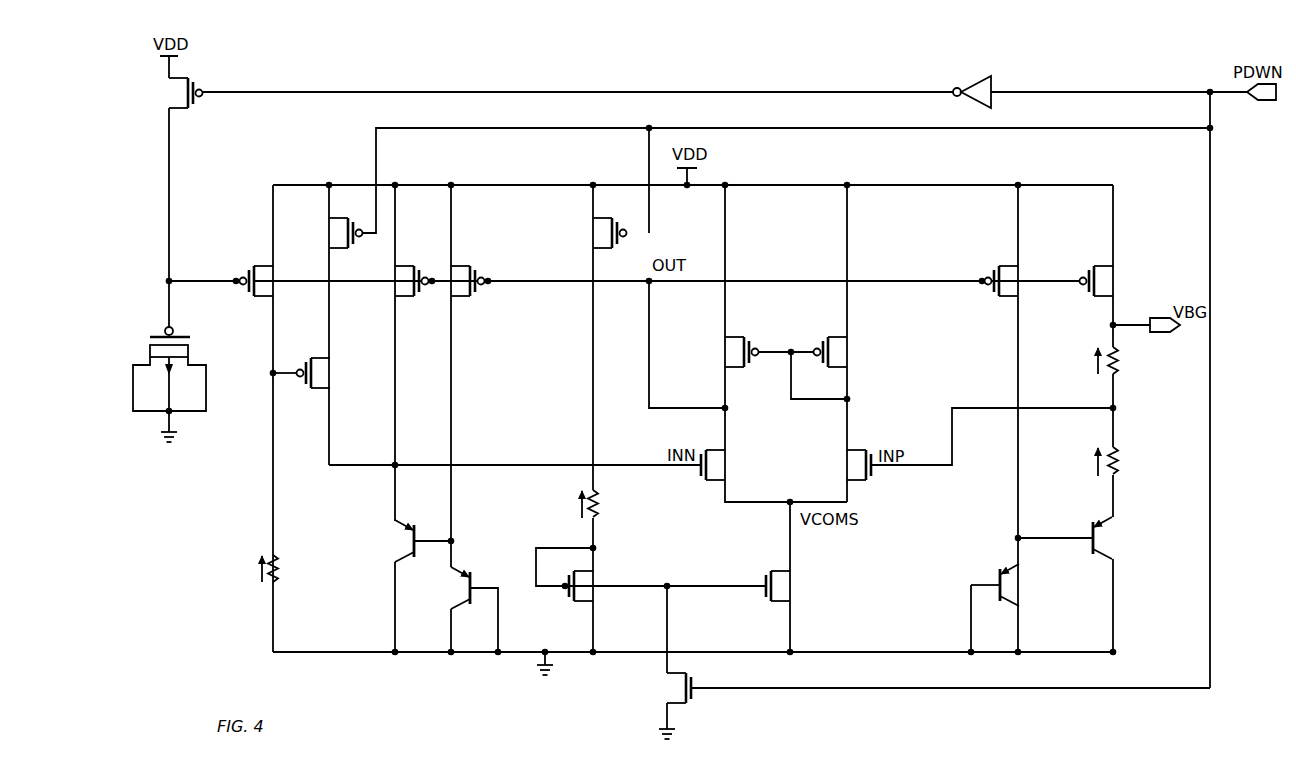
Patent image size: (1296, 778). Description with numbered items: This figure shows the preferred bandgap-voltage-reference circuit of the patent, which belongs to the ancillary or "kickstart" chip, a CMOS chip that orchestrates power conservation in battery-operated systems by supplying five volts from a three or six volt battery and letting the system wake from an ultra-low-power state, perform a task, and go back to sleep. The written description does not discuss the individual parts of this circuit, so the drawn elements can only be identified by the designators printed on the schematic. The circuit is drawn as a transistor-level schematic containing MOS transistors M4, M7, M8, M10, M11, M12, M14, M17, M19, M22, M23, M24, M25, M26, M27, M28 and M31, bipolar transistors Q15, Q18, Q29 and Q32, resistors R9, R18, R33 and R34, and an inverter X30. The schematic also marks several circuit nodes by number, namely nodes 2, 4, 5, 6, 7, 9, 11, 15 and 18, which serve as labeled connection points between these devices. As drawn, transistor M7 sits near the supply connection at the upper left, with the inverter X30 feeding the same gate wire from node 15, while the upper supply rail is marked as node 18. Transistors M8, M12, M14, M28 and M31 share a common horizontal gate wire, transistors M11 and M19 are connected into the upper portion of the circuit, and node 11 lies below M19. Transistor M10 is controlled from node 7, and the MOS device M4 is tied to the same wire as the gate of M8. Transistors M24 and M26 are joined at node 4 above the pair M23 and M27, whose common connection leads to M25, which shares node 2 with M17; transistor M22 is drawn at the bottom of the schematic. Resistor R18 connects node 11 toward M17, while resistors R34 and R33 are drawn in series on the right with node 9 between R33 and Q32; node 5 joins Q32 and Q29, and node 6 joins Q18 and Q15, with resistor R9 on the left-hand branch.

The node 2 (M17/M25 gate node) 2 is at (665, 619).
The node 4 (M24/M26 gate node) 4 is at (804, 366).
The node 5 (Q29/Q32 base node) 5 is at (1054, 528).
The node 6 (Q18 base / Q15 emitter node) 6 is at (442, 545).
The node 7 (M10 gate node) 7 is at (283, 364).
The node 9 (R33 / Q32 emitter node) 9 is at (1124, 496).
The node 11 (OUT / R18 node) 11 is at (608, 385).
The node 15 (inverter X30 input) 15 is at (578, 104).
The node 18 (VDD supply rail) 18 is at (693, 175).
The PMOS transistor M7 is at (155, 96).
The MOS capacitor M4 is at (153, 367).
The PMOS transistor M8 is at (281, 282).
The PMOS transistor M10 is at (333, 371).
The PMOS transistor M11 is at (319, 225).
The PMOS transistor M12 is at (384, 281).
The PMOS transistor M14 is at (489, 283).
The NMOS transistor M17 is at (606, 583).
The PMOS transistor M19 is at (578, 232).
The NMOS transistor M22 is at (649, 688).
The NMOS transistor M23 is at (737, 466).
The PMOS transistor M24 is at (719, 356).
The NMOS transistor M25 is at (803, 583).
The PMOS transistor M26 is at (851, 356).
The NMOS transistor M27 is at (832, 466).
The PMOS transistor M28 is at (1027, 277).
The PMOS transistor M31 is at (1122, 277).
The bipolar transistor Q15 is at (454, 622).
The bipolar transistor Q18 is at (377, 544).
The bipolar transistor Q29 is at (1043, 586).
The bipolar transistor Q32 is at (1151, 539).
The resistor R9 is at (248, 572).
The resistor R18 is at (609, 501).
The resistor R33 is at (1134, 449).
The resistor R34 is at (1134, 355).
The inverter X30 is at (983, 85).